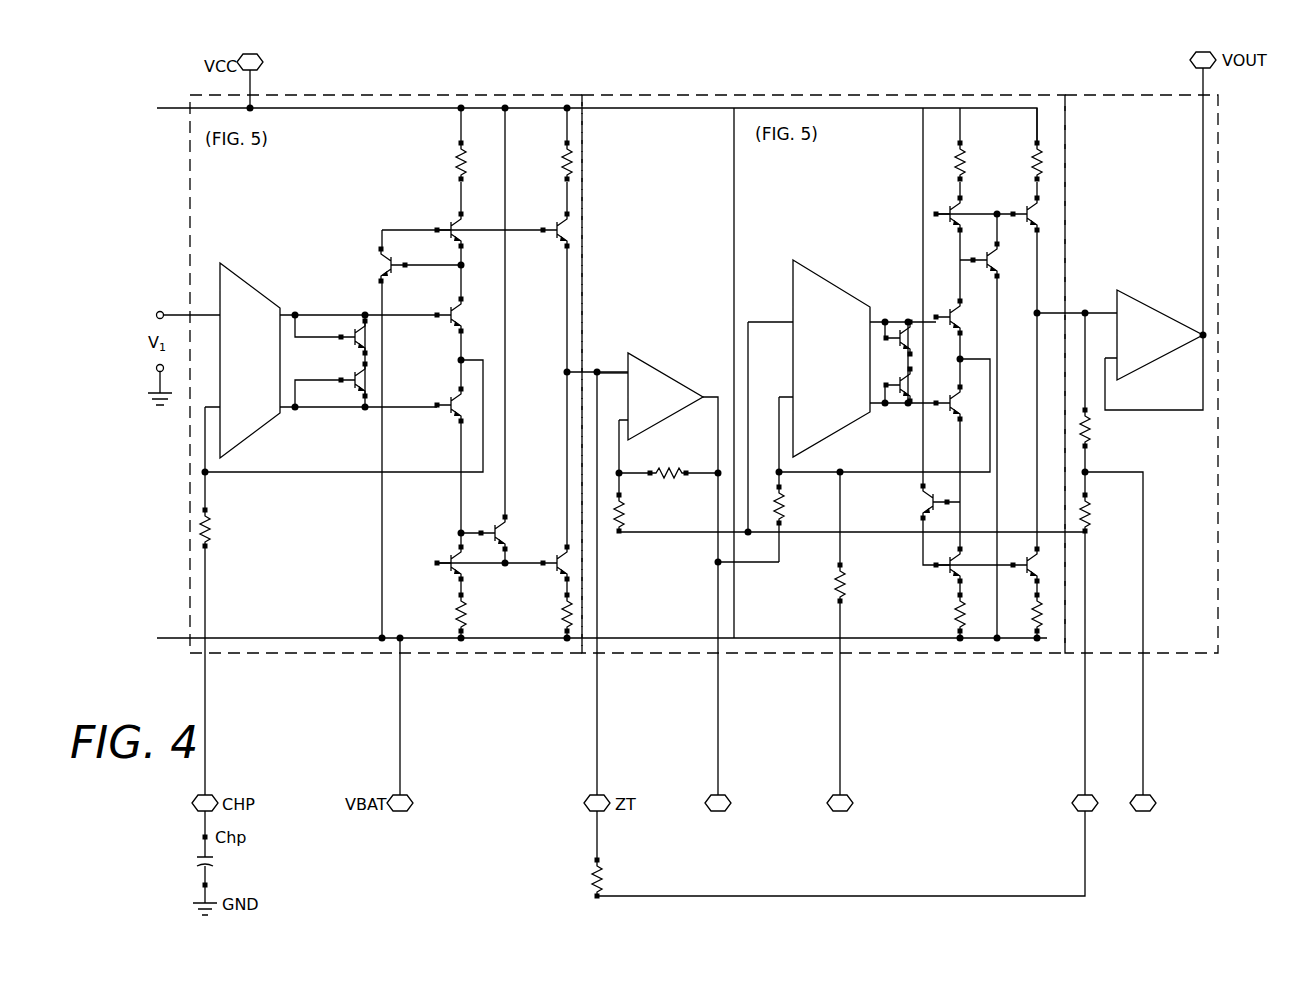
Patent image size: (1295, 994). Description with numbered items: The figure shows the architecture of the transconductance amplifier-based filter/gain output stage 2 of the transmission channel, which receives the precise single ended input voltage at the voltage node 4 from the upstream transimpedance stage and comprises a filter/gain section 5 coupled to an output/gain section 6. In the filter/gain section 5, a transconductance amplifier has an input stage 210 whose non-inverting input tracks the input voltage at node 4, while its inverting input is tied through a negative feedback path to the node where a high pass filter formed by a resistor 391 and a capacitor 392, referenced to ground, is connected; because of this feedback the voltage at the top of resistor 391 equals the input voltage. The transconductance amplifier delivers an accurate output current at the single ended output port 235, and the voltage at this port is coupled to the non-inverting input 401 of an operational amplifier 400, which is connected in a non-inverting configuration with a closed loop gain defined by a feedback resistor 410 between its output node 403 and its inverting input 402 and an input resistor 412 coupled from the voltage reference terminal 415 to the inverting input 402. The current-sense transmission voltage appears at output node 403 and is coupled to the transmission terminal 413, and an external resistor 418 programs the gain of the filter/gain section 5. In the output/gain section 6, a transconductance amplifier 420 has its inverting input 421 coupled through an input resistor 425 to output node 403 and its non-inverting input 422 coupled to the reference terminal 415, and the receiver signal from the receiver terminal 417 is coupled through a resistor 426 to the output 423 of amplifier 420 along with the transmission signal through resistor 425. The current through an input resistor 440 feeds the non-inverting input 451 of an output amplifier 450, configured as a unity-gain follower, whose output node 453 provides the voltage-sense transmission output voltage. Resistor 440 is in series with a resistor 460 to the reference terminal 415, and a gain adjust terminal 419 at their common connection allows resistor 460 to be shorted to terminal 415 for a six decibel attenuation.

The filter/gain output stage 2 is at (186, 583).
The voltage node 4 is at (160, 311).
The filter/gain section 5 is at (556, 655).
The output/gain section 6 is at (1222, 183).
The input stage 210 is at (261, 292).
The output port 235 is at (565, 372).
The resistor 391 is at (211, 524).
The capacitor 392 is at (200, 862).
The operational amplifier 400 is at (668, 375).
The non-inverting input 401 is at (615, 372).
The inverting input 402 is at (618, 420).
The output node 403 is at (712, 566).
The feedback resistor 410 is at (670, 479).
The input resistor 412 is at (625, 512).
The transmission terminal 413 is at (707, 797).
The voltage reference terminal 415 is at (1074, 797).
The receiver terminal 417 is at (848, 797).
The external resistor 418 is at (590, 884).
The gain adjust terminal 419 is at (1153, 797).
The transconductance amplifier 420 is at (847, 293).
The inverting input 421 is at (779, 396).
The non-inverting input 422 is at (773, 321).
The output 423 is at (962, 356).
The input resistor 425 is at (789, 509).
The resistor 426 is at (846, 590).
The input resistor 440 is at (1090, 432).
The output amplifier 450 is at (1161, 313).
The non-inverting input 451 is at (1102, 312).
The output node 453 is at (1207, 335).
The resistor 460 is at (1090, 506).